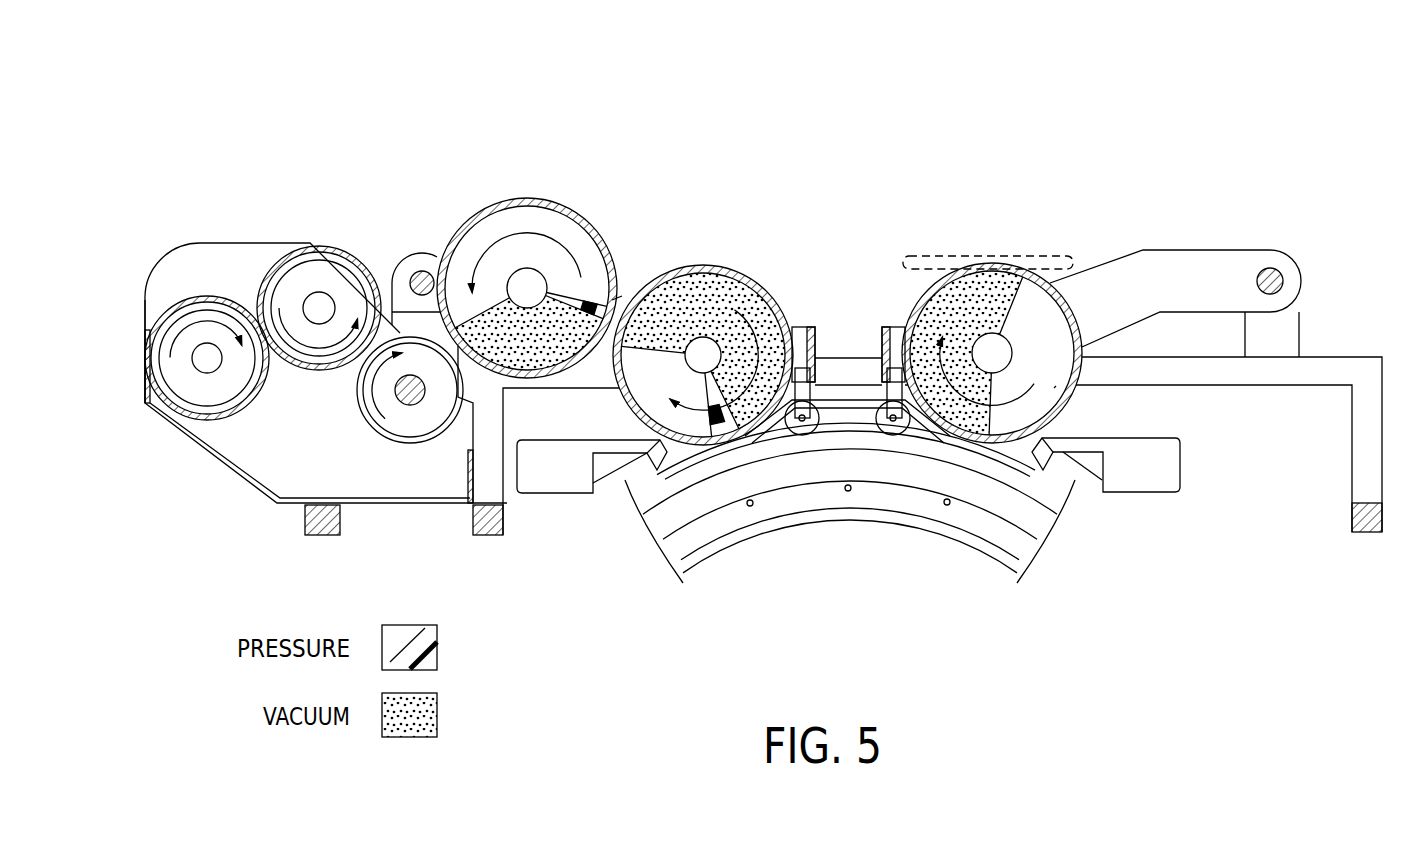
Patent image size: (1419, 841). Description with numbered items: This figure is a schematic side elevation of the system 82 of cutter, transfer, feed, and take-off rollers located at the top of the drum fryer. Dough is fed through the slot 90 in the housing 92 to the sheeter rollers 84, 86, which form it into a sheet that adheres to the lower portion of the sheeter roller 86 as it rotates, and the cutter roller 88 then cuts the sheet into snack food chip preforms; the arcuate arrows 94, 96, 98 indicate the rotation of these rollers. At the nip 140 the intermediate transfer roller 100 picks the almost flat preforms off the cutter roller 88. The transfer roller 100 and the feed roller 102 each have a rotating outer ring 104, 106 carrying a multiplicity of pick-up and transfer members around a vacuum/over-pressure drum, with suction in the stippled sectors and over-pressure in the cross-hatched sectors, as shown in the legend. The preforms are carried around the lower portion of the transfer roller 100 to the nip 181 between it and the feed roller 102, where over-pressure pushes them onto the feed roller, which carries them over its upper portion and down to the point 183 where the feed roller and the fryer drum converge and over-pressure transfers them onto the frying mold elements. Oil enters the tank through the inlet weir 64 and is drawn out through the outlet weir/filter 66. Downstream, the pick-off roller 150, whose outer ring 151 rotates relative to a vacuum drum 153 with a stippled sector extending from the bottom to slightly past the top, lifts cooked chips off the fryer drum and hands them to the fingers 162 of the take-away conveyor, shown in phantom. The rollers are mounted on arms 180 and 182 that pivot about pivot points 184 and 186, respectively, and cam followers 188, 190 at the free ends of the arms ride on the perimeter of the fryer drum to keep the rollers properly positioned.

The system of cutter, transfer, feed, and take-off rollers 82 is at (738, 72).
The slot 90 is at (208, 247).
The housing 92 is at (157, 300).
The sheeter roller 84 is at (230, 393).
The sheeter roller 86 is at (303, 347).
The cutter roller 88 is at (400, 433).
The rotation direction arrow 94 is at (253, 300).
The rotation direction arrow 96 is at (312, 368).
The rotation direction arrow 98 is at (352, 374).
The pivot point 184 is at (413, 271).
The intermediate transfer roller 100 is at (527, 254).
The outer ring 104 is at (540, 203).
The arm 180 is at (622, 296).
The feed roller 102 is at (705, 329).
The outer ring 106 is at (755, 287).
The nip 181 is at (603, 356).
The nip 140 is at (470, 378).
The inlet weir 64 is at (558, 488).
The outlet weir/filter 66 is at (1150, 485).
The point where the feed roller and drum fryer converge 183 is at (770, 425).
The cam follower 188 is at (805, 436).
The cam follower 190 is at (895, 436).
The pick-off roller 150 is at (1020, 318).
The outer ring 151 is at (1015, 268).
The vacuum drum 153 is at (1055, 388).
The fingers 162 is at (947, 262).
The arm 182 is at (1217, 263).
The pivot point 186 is at (1283, 282).